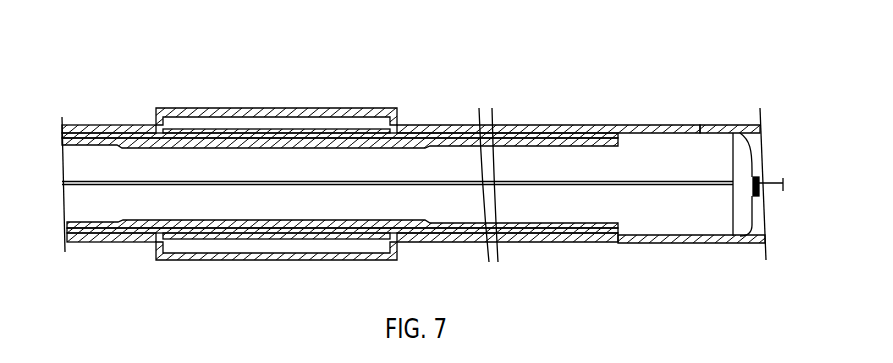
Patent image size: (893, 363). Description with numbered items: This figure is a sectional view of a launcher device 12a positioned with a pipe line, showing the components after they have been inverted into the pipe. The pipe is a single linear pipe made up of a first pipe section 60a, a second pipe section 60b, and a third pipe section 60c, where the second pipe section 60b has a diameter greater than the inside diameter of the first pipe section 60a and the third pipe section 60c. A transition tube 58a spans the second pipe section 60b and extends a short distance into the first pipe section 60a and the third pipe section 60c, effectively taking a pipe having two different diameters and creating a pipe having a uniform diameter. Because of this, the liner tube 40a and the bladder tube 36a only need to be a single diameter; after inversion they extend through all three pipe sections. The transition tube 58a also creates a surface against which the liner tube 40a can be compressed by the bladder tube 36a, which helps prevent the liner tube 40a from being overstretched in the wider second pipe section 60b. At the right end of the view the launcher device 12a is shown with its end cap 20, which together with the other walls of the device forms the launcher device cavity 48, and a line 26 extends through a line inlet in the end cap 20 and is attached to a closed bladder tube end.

The launcher device 12a is at (737, 121).
The end cap 20 is at (740, 145).
The line 26 is at (776, 197).
The bladder tube 36a is at (85, 220).
The liner tube 40a is at (67, 232).
The launcher device cavity 48 is at (682, 216).
The transition tube 58a is at (308, 240).
The first pipe section 60a is at (443, 124).
The second pipe section 60b is at (220, 107).
The third pipe section 60c is at (102, 124).